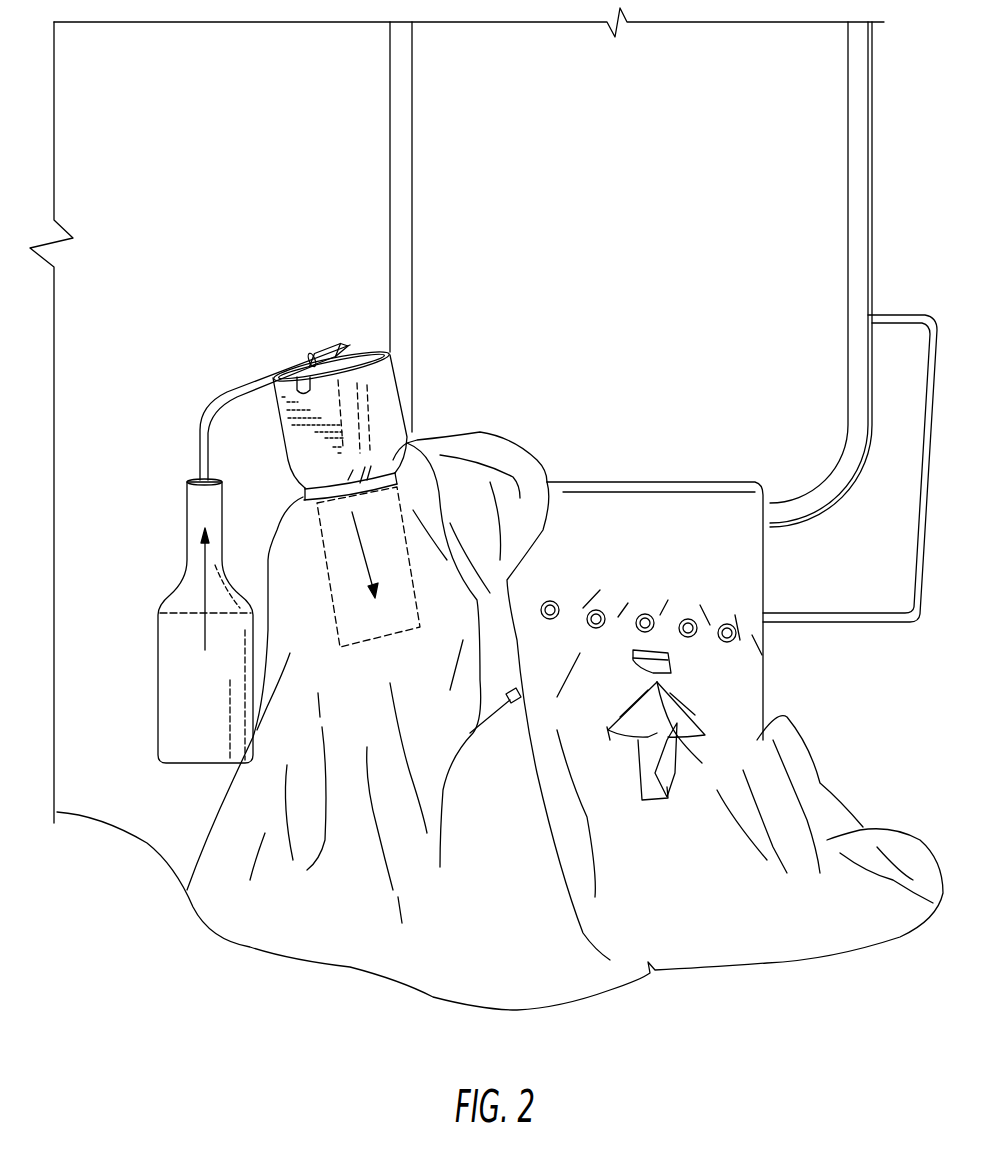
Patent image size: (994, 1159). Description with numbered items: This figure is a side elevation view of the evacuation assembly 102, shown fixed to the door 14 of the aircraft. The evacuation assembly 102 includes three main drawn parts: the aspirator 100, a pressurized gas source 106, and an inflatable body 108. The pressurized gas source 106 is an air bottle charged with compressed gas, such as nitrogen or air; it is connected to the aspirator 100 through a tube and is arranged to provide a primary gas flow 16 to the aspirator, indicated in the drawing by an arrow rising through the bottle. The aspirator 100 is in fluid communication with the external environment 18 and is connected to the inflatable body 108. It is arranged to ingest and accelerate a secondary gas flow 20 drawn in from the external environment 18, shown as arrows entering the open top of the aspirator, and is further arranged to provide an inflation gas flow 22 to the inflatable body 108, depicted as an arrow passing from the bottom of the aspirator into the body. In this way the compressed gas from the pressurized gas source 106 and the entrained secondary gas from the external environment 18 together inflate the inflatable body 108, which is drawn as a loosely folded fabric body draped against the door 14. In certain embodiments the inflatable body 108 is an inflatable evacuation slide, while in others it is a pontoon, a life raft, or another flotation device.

The door 14 is at (771, 350).
The primary gas flow 16 is at (200, 575).
The external environment 18 is at (258, 310).
The secondary gas flow 20 is at (355, 352).
The inflation gas flow 22 is at (320, 563).
The aspirator 100 is at (382, 403).
The evacuation assembly 102 is at (164, 828).
The pressurized gas source 106 is at (165, 643).
The inflatable body 108 is at (265, 833).